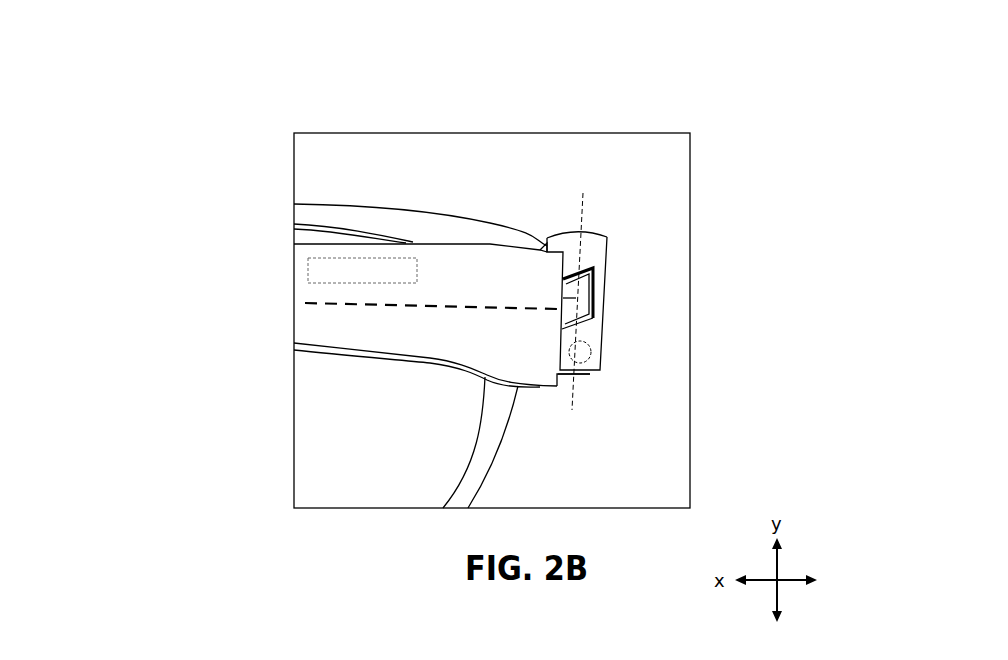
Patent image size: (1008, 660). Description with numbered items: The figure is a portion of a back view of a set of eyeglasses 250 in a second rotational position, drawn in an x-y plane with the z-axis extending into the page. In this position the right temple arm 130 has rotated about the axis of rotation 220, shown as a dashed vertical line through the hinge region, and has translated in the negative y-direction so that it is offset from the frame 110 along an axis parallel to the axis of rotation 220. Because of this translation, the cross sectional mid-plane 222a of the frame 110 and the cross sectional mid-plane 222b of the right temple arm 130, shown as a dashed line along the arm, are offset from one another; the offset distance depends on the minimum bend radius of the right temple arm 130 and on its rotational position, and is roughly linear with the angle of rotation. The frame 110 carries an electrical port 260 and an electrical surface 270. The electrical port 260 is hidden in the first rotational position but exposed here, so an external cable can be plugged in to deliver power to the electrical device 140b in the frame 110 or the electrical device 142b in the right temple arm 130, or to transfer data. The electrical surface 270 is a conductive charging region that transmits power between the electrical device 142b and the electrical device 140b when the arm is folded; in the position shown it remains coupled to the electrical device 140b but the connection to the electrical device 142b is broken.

The eyeglasses 250 is at (557, 100).
The right temple arm 130 is at (347, 333).
The electrical device 140b is at (325, 433).
The electrical device 142b is at (322, 278).
The cross sectional mid-plane of the right temple arm 222b is at (305, 303).
The frame 110 is at (587, 242).
The axis of rotation 220 is at (590, 213).
The cross sectional mid-plane of the frame 222a is at (595, 292).
The electrical port 260 is at (600, 320).
The electrical surface 270 is at (580, 352).